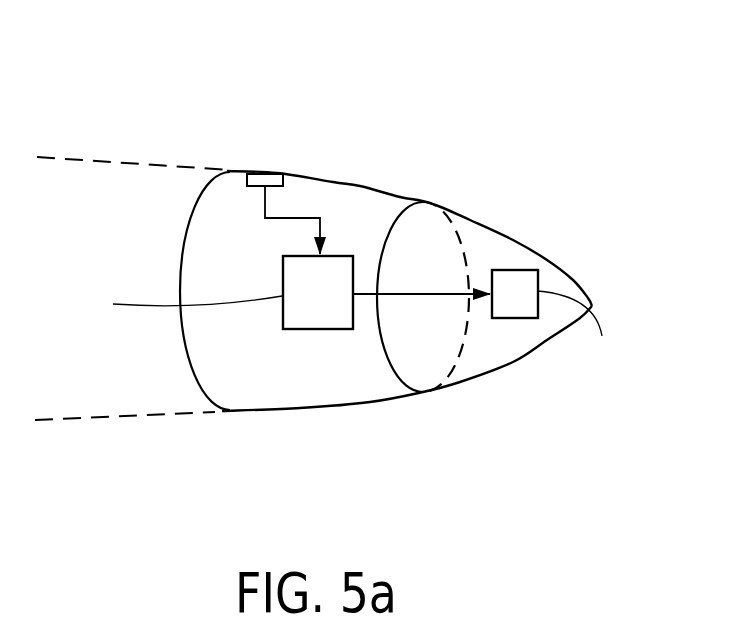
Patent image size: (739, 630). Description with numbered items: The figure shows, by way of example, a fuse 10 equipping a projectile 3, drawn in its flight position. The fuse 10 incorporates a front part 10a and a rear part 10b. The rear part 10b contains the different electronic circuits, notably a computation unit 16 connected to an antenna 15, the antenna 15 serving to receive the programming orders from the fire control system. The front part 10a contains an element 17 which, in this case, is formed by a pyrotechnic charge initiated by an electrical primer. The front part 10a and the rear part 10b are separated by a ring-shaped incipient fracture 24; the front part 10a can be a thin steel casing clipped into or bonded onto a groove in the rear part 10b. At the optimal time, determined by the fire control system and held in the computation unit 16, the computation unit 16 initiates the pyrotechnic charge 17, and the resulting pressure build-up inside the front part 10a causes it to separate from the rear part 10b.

The projectile 3 is at (92, 128).
The fuse 10 is at (564, 117).
The front part 10a is at (510, 243).
The rear part 10b is at (287, 393).
The antenna 15 is at (263, 170).
The computation unit 16 is at (302, 317).
The element 17 is at (515, 312).
The ring-shaped incipient fracture 24 is at (425, 398).